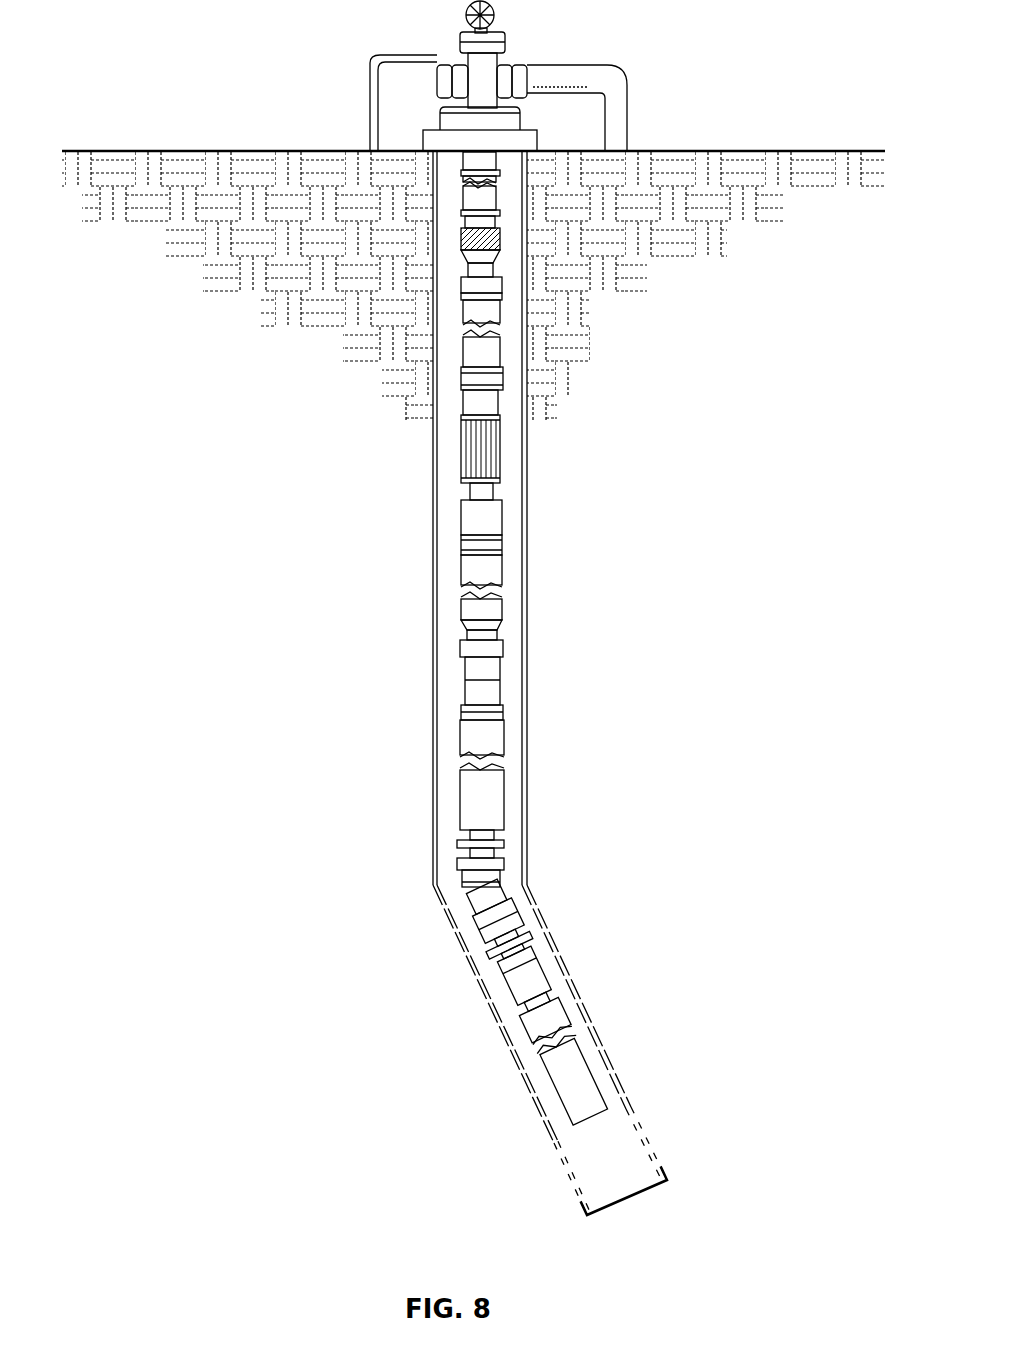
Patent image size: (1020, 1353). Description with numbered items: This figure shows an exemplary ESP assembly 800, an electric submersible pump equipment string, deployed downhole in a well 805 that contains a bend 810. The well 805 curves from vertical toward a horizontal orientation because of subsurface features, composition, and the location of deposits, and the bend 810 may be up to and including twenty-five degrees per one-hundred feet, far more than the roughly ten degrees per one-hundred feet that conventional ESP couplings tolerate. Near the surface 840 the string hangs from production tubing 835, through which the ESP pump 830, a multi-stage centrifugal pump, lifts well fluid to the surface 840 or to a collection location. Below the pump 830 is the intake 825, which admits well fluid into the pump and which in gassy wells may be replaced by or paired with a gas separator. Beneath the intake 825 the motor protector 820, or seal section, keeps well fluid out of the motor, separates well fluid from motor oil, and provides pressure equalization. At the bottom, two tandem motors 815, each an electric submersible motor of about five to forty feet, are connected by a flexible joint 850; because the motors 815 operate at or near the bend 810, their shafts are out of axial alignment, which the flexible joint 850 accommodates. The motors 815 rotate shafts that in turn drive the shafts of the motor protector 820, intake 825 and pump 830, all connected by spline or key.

The ESP assembly 800 is at (508, 415).
The downhole well 805 is at (510, 663).
The bend 810 is at (433, 886).
The tandem motors 815 is at (488, 802).
The motor protector 820 is at (487, 698).
The intake 825 is at (482, 460).
The ESP pump 830 is at (492, 293).
The production tubing 835 is at (482, 203).
The surface 840 is at (720, 150).
The flexible joint 850 is at (490, 894).